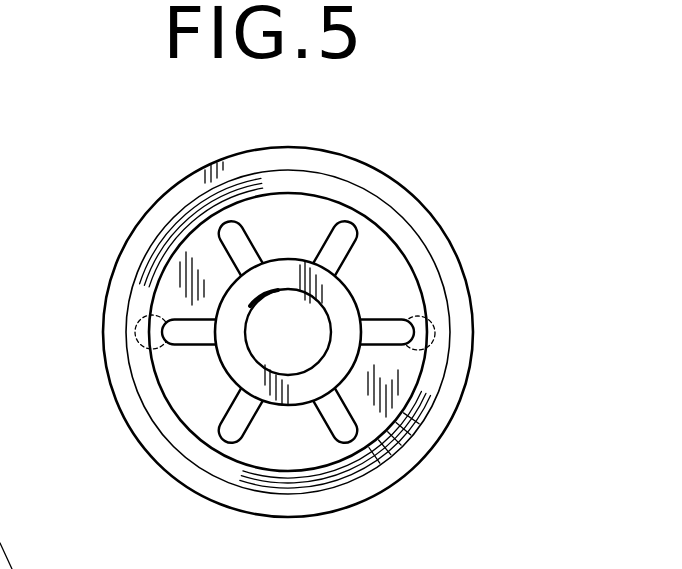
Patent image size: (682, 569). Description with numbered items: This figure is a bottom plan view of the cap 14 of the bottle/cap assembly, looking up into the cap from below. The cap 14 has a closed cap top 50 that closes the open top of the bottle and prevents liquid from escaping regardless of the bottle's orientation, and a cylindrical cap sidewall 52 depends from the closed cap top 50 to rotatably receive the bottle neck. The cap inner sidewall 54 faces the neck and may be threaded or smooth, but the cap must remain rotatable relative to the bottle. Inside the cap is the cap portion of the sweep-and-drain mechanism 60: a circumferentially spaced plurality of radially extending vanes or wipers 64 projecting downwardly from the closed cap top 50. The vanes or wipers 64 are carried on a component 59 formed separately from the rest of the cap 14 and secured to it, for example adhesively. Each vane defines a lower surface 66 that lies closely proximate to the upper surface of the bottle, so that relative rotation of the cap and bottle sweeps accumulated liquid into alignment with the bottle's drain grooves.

The cap 14 is at (138, 462).
The closed cap top 50 is at (380, 258).
The cylindrical cap sidewall 52 is at (475, 363).
The cap inner sidewall 54 is at (288, 510).
The component containing vanes or wipers 59 is at (190, 380).
The sweep-and-drain mechanism 60 is at (222, 247).
The vanes or wipers 64 is at (365, 281).
The lower surface 66 is at (348, 432).